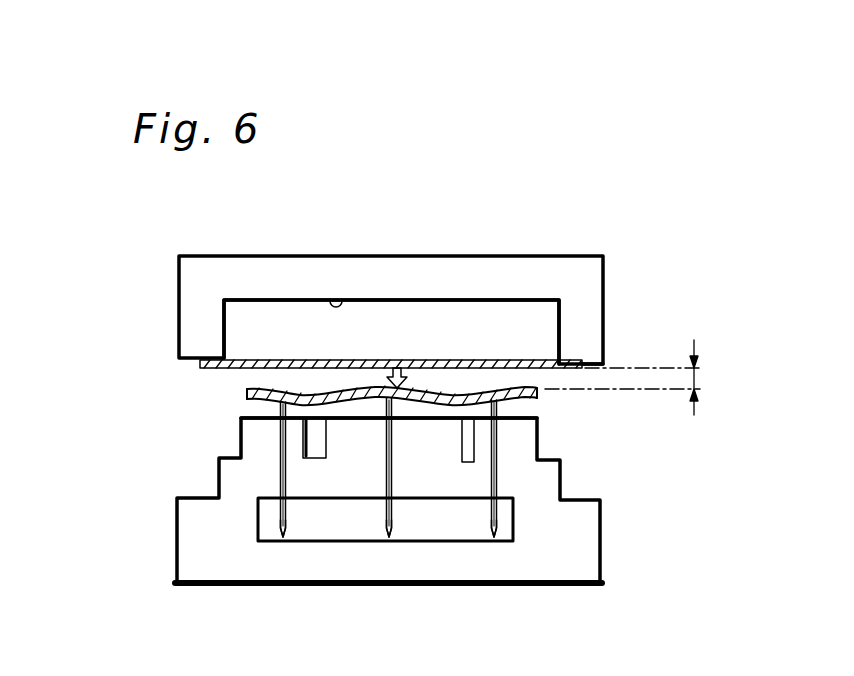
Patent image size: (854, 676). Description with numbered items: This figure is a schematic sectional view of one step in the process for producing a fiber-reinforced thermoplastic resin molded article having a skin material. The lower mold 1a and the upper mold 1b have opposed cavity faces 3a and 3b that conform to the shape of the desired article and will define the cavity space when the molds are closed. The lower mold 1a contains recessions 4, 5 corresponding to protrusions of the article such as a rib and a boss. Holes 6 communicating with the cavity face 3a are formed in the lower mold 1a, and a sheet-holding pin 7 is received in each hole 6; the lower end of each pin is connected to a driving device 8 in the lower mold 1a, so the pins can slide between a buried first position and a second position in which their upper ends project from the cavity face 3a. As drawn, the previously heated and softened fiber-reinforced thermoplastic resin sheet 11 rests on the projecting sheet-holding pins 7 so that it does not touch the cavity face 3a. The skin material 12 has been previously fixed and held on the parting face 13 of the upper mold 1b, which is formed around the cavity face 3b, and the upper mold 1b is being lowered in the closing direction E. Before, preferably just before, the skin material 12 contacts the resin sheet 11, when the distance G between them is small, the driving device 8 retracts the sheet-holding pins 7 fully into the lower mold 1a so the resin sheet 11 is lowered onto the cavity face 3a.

The lower mold 1a is at (192, 541).
The upper mold 1b is at (182, 267).
The cavity face 3a is at (262, 412).
The cavity face 3b is at (348, 299).
The recession 4 is at (463, 452).
The recession 5 is at (326, 448).
The hole 6 is at (284, 541).
The sheet-holding pin 7 is at (282, 473).
The driving device 8 is at (513, 520).
The fiber-reinforced thermoplastic resin sheet 11 is at (247, 396).
The skin material 12 is at (235, 362).
The parting face 13 is at (592, 362).
The direction of mold closing E is at (404, 366).
The distance between skin material and resin sheet G is at (634, 377).